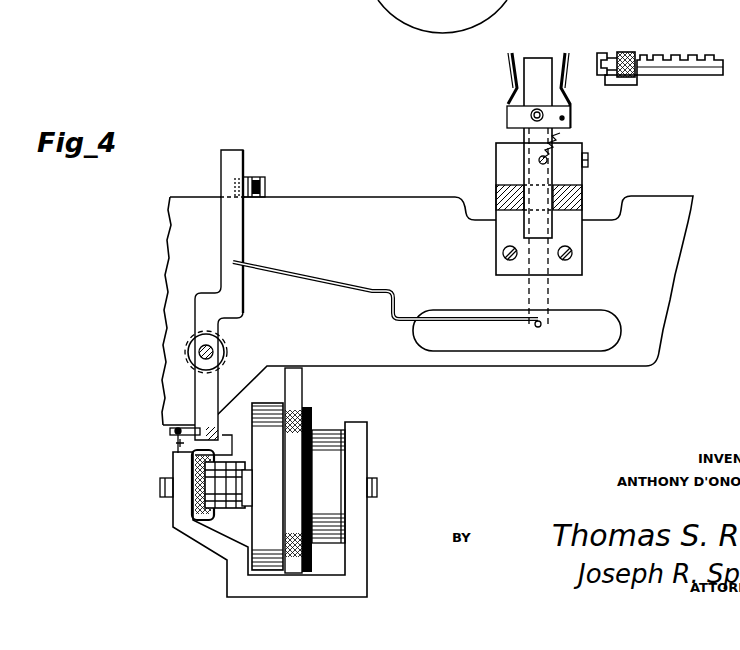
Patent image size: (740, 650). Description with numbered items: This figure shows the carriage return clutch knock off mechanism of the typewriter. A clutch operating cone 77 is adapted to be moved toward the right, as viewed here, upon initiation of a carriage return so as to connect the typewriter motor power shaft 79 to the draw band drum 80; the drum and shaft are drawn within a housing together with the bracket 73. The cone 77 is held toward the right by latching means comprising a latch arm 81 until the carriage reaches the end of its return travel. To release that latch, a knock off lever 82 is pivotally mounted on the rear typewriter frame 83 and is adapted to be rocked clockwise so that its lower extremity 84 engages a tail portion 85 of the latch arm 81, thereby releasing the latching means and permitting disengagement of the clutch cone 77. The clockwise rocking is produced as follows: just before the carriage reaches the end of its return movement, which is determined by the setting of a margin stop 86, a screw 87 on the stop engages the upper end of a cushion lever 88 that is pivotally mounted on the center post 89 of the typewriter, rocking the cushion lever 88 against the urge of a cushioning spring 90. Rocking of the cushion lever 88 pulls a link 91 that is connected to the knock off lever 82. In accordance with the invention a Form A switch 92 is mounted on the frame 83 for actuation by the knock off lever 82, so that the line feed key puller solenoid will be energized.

The shaft bracket 73 is at (298, 390).
The clutch operating cone 77 is at (247, 507).
The typewriter motor power shaft 79 is at (162, 488).
The draw band drum 80 is at (260, 440).
The latch arm 81 is at (180, 444).
The knock off lever 82 is at (228, 238).
The rear typewriter frame 83 is at (336, 245).
The lower extremity 84 is at (220, 417).
The tail portion 85 is at (200, 427).
The margin stop 86 is at (633, 53).
The screw 87 is at (600, 53).
The cushion lever 88 is at (566, 82).
The center post 89 is at (533, 67).
The cushioning spring 90 is at (560, 141).
The link 91 is at (362, 286).
The Form A switch 92 is at (262, 166).